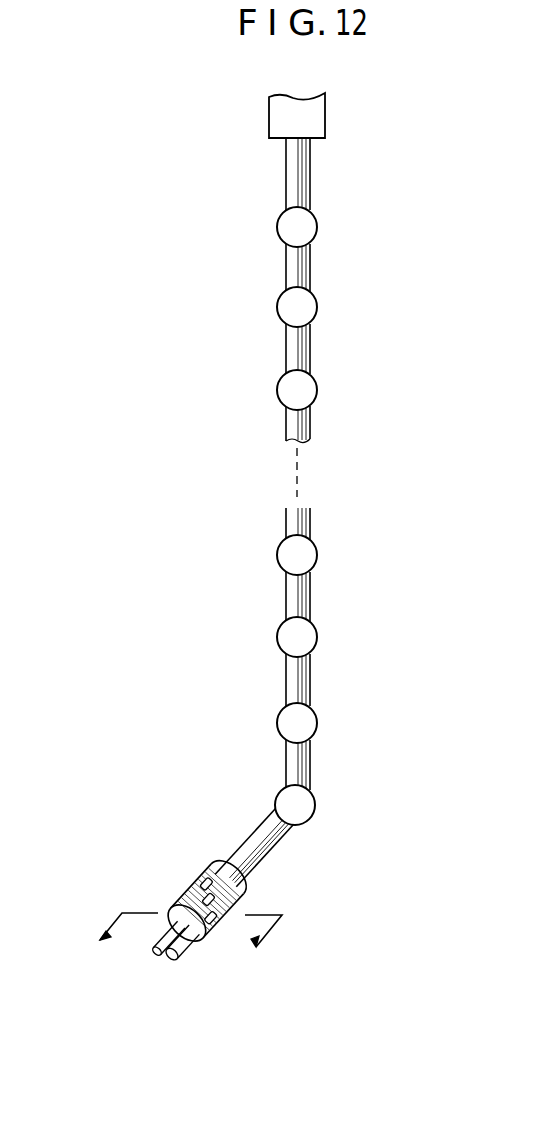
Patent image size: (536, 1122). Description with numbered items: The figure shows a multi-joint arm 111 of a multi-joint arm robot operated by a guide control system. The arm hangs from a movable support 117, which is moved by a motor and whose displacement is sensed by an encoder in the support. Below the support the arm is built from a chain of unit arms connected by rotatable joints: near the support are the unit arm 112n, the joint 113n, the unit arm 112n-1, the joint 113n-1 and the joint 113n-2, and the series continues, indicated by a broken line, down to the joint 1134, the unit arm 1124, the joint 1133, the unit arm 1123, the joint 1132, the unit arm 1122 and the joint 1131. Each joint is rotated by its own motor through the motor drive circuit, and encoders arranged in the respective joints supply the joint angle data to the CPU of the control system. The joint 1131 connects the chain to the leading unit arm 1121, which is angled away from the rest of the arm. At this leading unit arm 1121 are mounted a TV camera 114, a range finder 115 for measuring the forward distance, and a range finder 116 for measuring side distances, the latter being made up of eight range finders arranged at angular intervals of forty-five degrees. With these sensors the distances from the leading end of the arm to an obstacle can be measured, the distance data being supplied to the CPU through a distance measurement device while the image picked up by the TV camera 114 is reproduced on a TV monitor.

The multi-joint arm 111 is at (216, 487).
The movable support 117 is at (325, 120).
The unit arm 112n is at (313, 270).
The unit arm 112n-1 is at (313, 356).
The joint 113n is at (275, 223).
The joint 113n-1 is at (277, 306).
The joint 113n-2 is at (277, 390).
The joint 1134 is at (275, 554).
The joint 1133 is at (275, 636).
The joint 1132 is at (275, 720).
The joint 1131 is at (275, 796).
The unit arm 1124 is at (313, 600).
The unit arm 1123 is at (313, 687).
The unit arm 1122 is at (313, 770).
The leading unit arm 1121 is at (282, 850).
The range finder 116 is at (229, 943).
The range finder 115 is at (173, 963).
The TV camera 114 is at (156, 959).